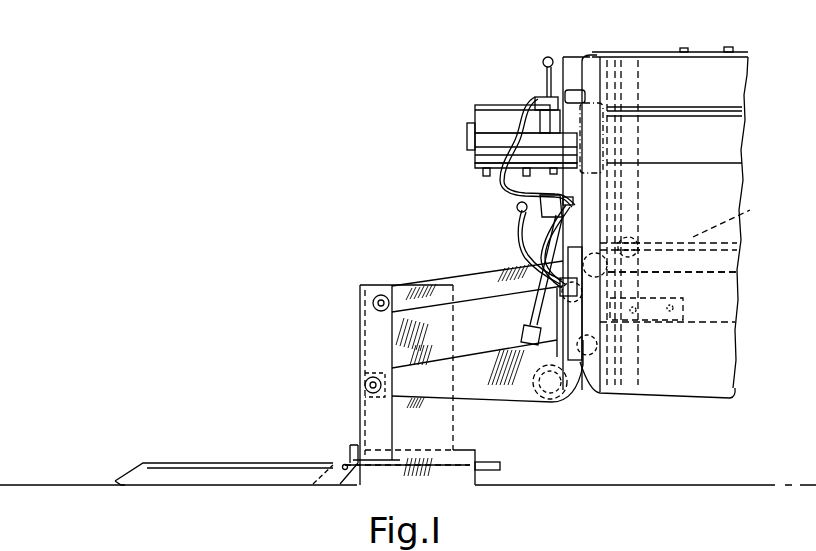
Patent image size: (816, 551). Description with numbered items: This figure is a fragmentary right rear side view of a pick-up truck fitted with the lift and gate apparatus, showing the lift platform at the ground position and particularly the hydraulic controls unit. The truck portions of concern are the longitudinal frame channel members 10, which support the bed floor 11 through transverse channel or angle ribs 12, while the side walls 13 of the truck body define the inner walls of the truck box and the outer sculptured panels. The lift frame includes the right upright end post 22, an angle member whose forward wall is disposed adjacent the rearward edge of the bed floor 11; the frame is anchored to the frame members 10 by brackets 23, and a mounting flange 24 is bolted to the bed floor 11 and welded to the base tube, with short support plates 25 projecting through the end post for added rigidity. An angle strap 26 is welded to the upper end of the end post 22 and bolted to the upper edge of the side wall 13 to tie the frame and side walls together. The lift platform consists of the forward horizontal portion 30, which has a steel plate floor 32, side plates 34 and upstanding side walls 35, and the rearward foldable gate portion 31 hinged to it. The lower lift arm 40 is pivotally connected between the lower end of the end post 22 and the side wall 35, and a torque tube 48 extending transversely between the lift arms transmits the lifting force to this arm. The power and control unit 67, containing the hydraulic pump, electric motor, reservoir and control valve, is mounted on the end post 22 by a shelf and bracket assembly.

The longitudinal frame channel members 10 is at (715, 305).
The bed floor 11 is at (732, 220).
The transverse channel or angle ribs 12 is at (640, 263).
The side walls 13 is at (727, 135).
The right upright end post 22 is at (570, 55).
The brackets 23 is at (657, 312).
The mounting flange 24 is at (620, 285).
The support plates 25 is at (612, 330).
The angle straps 26 is at (657, 52).
The forward horizontal portion 30 is at (447, 487).
The rearward foldable gate portion 31 is at (258, 488).
The floor 32 is at (490, 460).
The side plates 34 is at (383, 485).
The side walls 35 is at (443, 430).
The lower lift arm 40 is at (517, 397).
The torque tube 48 is at (568, 390).
The power and control unit 67 is at (484, 106).